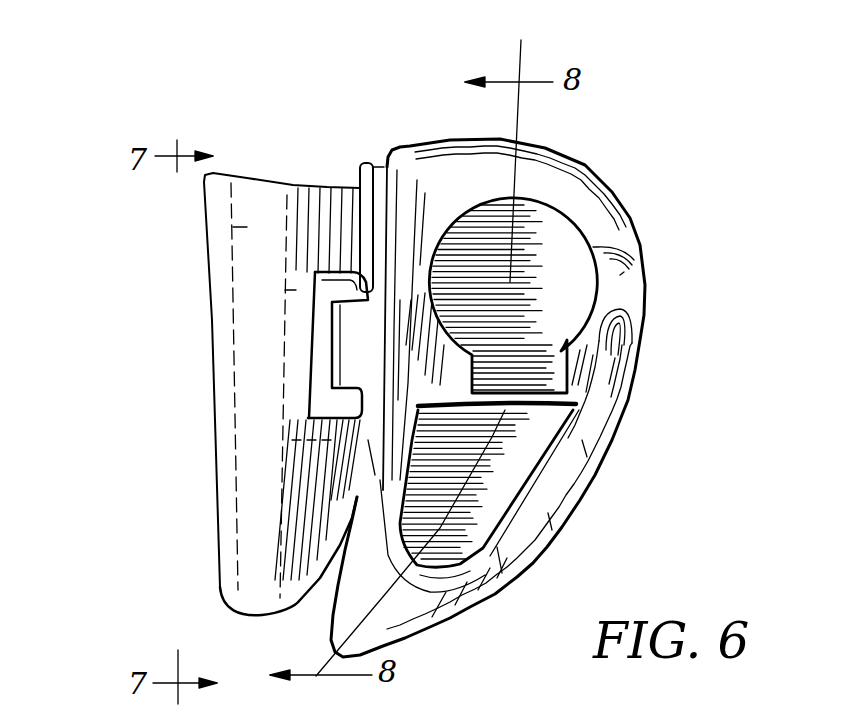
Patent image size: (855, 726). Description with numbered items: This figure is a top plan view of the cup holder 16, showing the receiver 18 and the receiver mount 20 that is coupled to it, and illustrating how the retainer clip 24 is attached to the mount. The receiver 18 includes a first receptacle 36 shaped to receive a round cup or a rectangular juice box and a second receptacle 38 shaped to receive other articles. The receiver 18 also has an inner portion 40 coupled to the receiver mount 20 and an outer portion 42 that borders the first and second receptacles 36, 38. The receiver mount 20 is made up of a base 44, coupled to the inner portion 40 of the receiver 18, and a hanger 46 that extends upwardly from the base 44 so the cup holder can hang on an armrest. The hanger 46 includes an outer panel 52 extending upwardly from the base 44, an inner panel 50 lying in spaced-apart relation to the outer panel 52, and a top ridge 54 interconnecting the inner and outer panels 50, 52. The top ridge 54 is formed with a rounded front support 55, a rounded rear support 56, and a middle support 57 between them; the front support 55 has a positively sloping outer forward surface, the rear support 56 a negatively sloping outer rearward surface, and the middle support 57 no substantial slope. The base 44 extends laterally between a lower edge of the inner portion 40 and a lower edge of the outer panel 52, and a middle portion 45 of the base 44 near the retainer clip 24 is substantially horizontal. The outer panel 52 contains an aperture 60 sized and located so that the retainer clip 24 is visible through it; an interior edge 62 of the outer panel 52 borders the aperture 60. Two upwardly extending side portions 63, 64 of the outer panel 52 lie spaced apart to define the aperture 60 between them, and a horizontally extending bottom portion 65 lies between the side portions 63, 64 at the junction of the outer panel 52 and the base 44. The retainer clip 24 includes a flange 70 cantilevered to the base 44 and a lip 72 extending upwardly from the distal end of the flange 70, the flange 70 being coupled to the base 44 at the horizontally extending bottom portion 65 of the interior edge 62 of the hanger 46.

The cup holder 16 is at (627, 185).
The receiver 18 is at (634, 218).
The receiver mount 20 is at (241, 172).
The retainer clip 24 is at (310, 393).
The first receptacle 36 is at (548, 240).
The second receptacle 38 is at (485, 508).
The inner portion 40 is at (403, 153).
The outer portion 42 is at (583, 440).
The base 44 is at (380, 248).
The middle portion 45 is at (372, 372).
The hanger 46 is at (307, 187).
The inner panel 50 is at (213, 233).
The outer panel 52 is at (377, 210).
The top ridge 54 is at (266, 255).
The front support 55 is at (247, 533).
The rear support 56 is at (247, 227).
The middle support 57 is at (253, 350).
The aperture 60 is at (323, 305).
The interior edge 62 is at (313, 288).
The side portion 63 is at (305, 553).
The side portion 64 is at (364, 165).
The bottom portion 65 is at (530, 330).
The flange 70 is at (327, 402).
The lip 72 is at (336, 362).